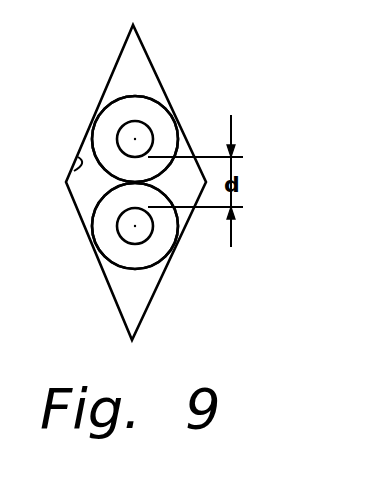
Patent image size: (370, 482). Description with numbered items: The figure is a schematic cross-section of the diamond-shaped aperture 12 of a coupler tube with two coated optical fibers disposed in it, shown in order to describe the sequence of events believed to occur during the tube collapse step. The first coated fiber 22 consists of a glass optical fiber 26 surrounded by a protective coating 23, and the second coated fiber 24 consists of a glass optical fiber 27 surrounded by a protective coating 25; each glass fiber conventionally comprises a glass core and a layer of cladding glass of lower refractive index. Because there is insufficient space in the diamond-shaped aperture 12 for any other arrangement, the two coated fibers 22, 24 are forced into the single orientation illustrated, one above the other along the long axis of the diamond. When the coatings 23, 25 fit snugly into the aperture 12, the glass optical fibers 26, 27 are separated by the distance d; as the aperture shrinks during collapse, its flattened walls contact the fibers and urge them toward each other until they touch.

The aperture 12 is at (80, 173).
The coated optical fiber 22 is at (124, 94).
The protective coating 23 is at (108, 117).
The glass optical fiber 26 is at (129, 139).
The glass optical fiber 27 is at (129, 226).
The protective coating 25 is at (108, 240).
The coated optical fiber 24 is at (124, 273).